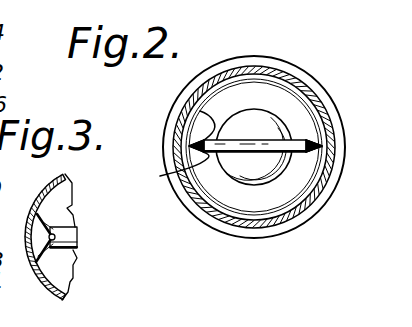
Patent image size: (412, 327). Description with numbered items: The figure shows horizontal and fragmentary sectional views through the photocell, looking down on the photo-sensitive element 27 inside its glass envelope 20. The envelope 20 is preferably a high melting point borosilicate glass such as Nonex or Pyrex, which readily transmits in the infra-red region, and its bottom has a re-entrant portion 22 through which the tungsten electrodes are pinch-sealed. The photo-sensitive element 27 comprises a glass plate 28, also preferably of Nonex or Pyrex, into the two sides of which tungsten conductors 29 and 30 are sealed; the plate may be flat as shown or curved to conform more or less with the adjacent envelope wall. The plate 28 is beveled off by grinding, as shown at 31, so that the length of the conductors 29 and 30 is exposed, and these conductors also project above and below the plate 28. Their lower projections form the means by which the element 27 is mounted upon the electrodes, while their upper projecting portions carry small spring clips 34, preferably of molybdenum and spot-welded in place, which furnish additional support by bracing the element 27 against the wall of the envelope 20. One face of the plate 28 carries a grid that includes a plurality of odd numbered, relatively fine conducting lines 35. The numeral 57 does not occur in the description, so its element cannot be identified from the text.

In FIG. 2, the envelope 20 is at (318, 194).
In FIG. 3, the envelope 20 is at (52, 288).
In FIG. 2, the re-entrant portion 22 is at (264, 103).
In FIG. 3, the photo-sensitive element 27 is at (70, 236).
In FIG. 2, the glass plate 28 is at (272, 143).
In FIG. 2, the tungsten conductor 29 is at (200, 111).
In FIG. 3, the tungsten conductor 29 is at (75, 253).
In FIG. 2, the tungsten conductor 30 is at (309, 140).
In FIG. 2, the beveled edge 31 is at (190, 147).
In FIG. 3, the spring clip 34 is at (45, 216).
In FIG. 2, the odd numbered conducting lines 35 is at (168, 178).
In FIG. 2, the outer rim 57 is at (224, 229).